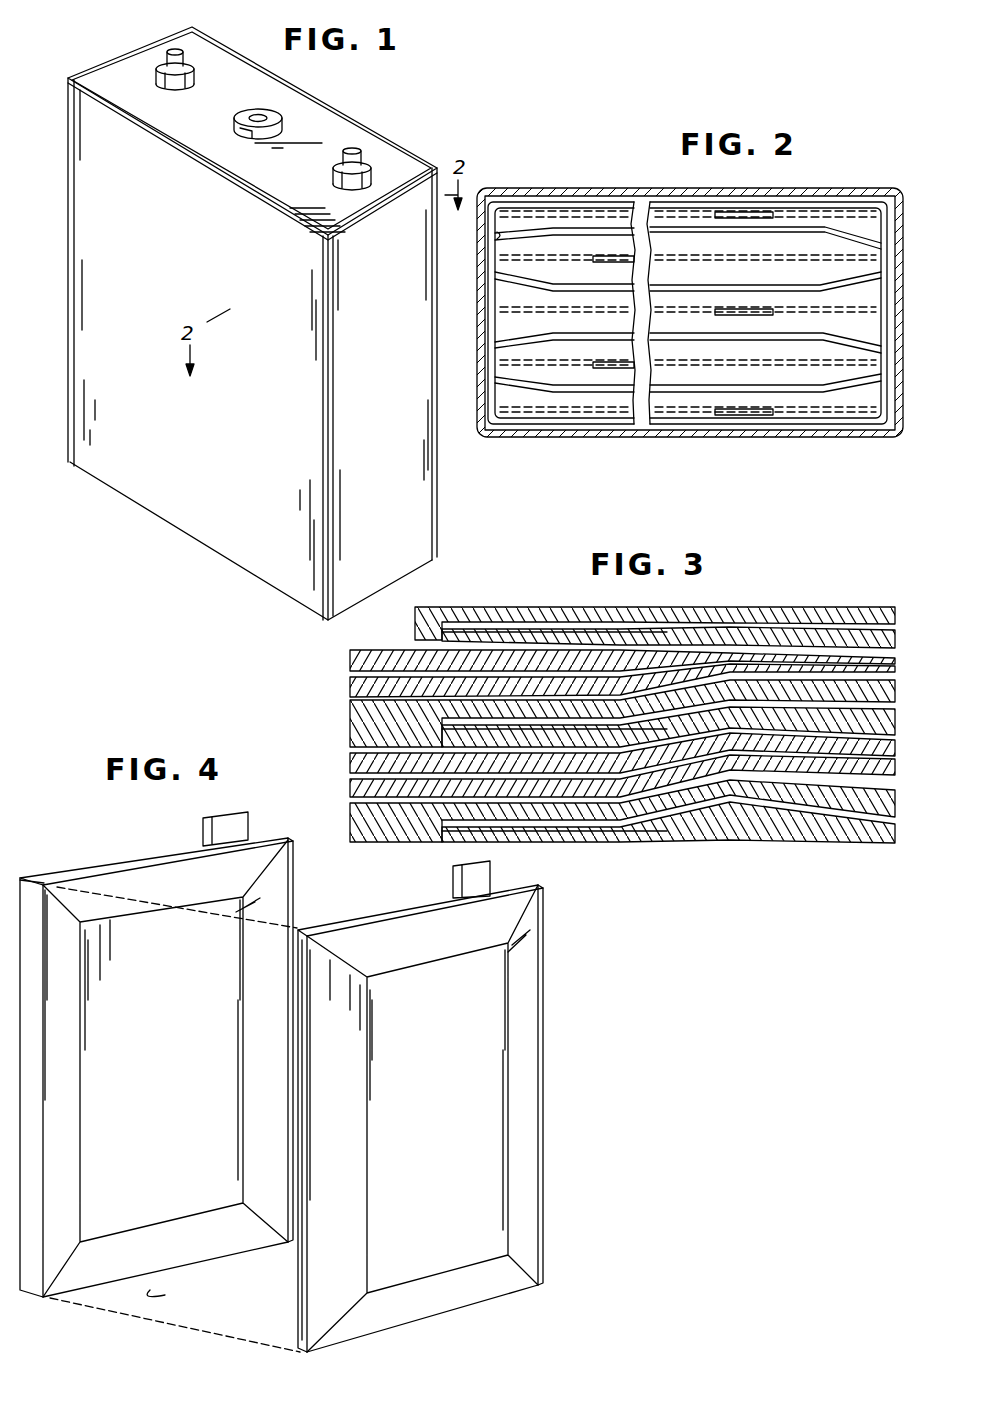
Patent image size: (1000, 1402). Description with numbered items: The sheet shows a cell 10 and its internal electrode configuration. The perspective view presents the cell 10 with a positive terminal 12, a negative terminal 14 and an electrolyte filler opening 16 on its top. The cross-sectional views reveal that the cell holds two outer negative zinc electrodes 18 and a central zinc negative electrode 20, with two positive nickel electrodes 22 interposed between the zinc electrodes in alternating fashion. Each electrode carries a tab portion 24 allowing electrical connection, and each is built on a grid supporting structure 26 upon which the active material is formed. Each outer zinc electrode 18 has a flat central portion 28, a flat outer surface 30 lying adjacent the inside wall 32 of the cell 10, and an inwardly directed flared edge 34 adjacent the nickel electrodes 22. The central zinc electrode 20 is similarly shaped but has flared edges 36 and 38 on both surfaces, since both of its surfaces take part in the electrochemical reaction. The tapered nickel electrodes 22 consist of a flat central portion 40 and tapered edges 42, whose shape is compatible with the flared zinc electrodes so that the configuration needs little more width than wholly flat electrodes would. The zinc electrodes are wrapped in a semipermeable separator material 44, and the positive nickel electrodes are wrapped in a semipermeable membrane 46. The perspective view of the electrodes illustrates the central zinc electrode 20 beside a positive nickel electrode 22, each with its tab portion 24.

In FIG. 1, the cell 10 is at (350, 104).
In FIG. 1, the positive terminal 12 is at (172, 58).
In FIG. 1, the negative terminal 14 is at (360, 158).
In FIG. 1, the electrolyte filler opening 16 is at (247, 108).
In FIG. 2, the outer negative zinc electrode 18 is at (798, 213).
In FIG. 3, the outer negative zinc electrode 18 is at (774, 596).
In FIG. 2, the central zinc negative electrode 20 is at (500, 312).
In FIG. 3, the central zinc negative electrode 20 is at (351, 723).
In FIG. 4, the central zinc negative electrode 20 is at (100, 870).
In FIG. 2, the positive nickel electrode 22 is at (548, 237).
In FIG. 3, the positive nickel electrode 22 is at (351, 668).
In FIG. 4, the positive nickel electrode 22 is at (548, 1006).
In FIG. 2, the tab portion 24 is at (606, 255).
In FIG. 3, the tab portion 24 is at (486, 628).
In FIG. 4, the tab portion 24 is at (208, 817).
In FIG. 2, the grid supporting structure 26 is at (860, 206).
In FIG. 3, the grid supporting structure 26 is at (395, 650).
In FIG. 2, the flat central portion 28 is at (690, 246).
In FIG. 3, the flat central portion 28 is at (520, 652).
In FIG. 4, the flat central portion 28 is at (165, 1040).
In FIG. 2, the flat outer surface 30 is at (833, 425).
In FIG. 3, the flat outer surface 30 is at (700, 608).
In FIG. 1, the inside wall 32 is at (150, 493).
In FIG. 2, the inside wall 32 is at (516, 190).
In FIG. 3, the inside wall 32 is at (896, 612).
In FIG. 2, the inwardly directed flared edge 34 is at (822, 237).
In FIG. 3, the inwardly directed flared edge 34 is at (710, 655).
In FIG. 2, the flared edge 36 is at (547, 276).
In FIG. 3, the flared edge 36 is at (790, 711).
In FIG. 2, the flared edge 38 is at (545, 340).
In FIG. 3, the flared edge 38 is at (760, 761).
In FIG. 4, the flared edge 38 is at (286, 889).
In FIG. 2, the flat central portion 40 is at (656, 240).
In FIG. 3, the flat central portion 40 is at (420, 630).
In FIG. 4, the flat central portion 40 is at (506, 1069).
In FIG. 2, the tapered edge 42 is at (497, 236).
In FIG. 3, the tapered edge 42 is at (812, 665).
In FIG. 4, the tapered edge 42 is at (516, 933).
In FIG. 2, the semipermeable separator material 44 is at (520, 203).
In FIG. 2, the semipermeable membrane 46 is at (492, 258).